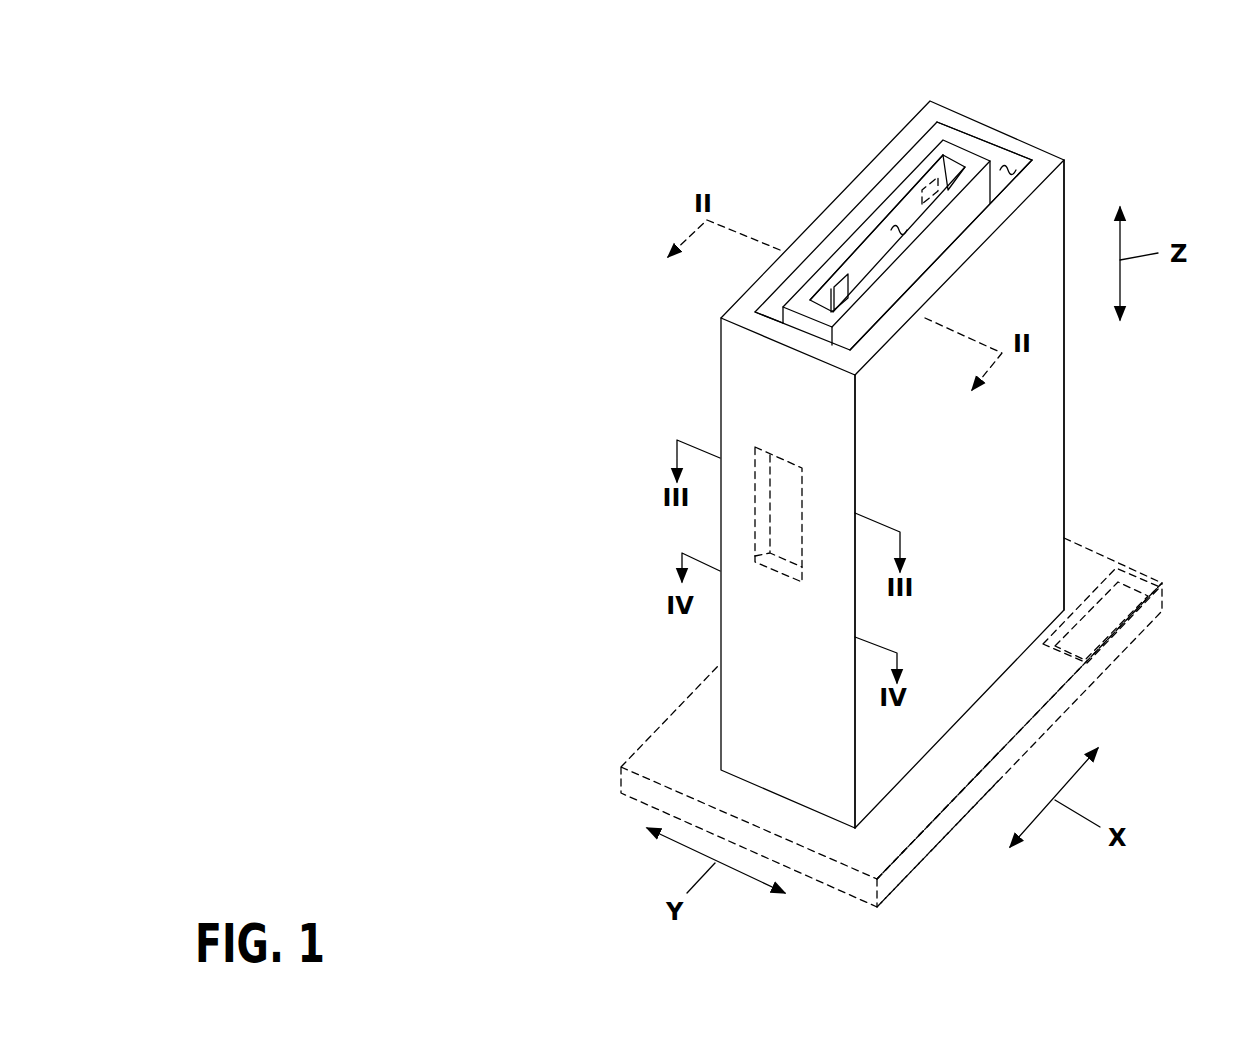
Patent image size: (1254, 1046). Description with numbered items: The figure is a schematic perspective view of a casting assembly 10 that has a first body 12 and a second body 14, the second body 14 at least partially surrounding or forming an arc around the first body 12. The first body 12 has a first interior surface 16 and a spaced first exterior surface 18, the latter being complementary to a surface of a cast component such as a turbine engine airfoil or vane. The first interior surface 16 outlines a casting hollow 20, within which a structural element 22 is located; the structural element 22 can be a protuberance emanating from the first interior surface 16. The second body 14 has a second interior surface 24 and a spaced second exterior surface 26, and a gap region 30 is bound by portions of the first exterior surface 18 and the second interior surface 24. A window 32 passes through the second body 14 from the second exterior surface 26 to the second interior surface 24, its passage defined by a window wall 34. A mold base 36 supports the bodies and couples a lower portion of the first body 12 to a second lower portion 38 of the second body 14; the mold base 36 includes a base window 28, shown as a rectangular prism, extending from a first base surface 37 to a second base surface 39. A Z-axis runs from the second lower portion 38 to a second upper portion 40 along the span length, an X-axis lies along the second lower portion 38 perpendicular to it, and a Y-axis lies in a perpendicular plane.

The casting assembly 10 is at (678, 390).
The first body 12 is at (965, 143).
The second body 14 is at (1067, 393).
The first interior surface 16 is at (837, 245).
The first exterior surface 18 is at (836, 246).
The casting hollow 20 is at (866, 253).
The structural element 22 is at (838, 276).
The second interior surface 24 is at (796, 298).
The second exterior surface 26 is at (718, 312).
The base window 28 is at (1118, 628).
The gap region 30 is at (1012, 166).
The window 32 is at (754, 530).
The window wall 34 is at (778, 578).
The mold base 36 is at (618, 785).
The first base surface 37 is at (933, 850).
The second lower portion 38 is at (1022, 657).
The second base surface 39 is at (913, 875).
The second upper portion 40 is at (977, 252).